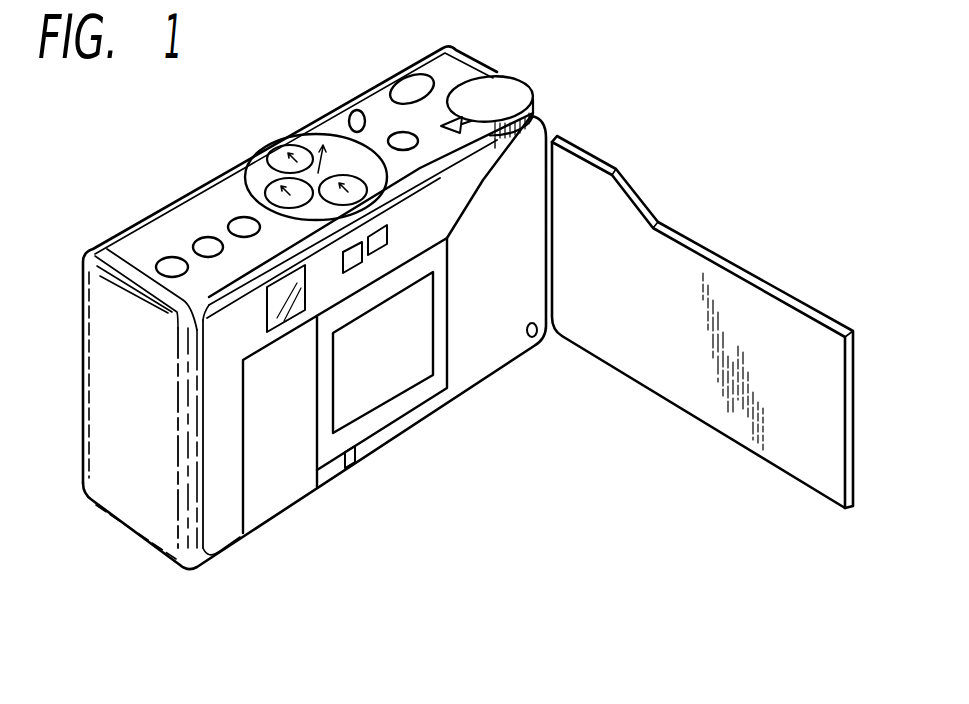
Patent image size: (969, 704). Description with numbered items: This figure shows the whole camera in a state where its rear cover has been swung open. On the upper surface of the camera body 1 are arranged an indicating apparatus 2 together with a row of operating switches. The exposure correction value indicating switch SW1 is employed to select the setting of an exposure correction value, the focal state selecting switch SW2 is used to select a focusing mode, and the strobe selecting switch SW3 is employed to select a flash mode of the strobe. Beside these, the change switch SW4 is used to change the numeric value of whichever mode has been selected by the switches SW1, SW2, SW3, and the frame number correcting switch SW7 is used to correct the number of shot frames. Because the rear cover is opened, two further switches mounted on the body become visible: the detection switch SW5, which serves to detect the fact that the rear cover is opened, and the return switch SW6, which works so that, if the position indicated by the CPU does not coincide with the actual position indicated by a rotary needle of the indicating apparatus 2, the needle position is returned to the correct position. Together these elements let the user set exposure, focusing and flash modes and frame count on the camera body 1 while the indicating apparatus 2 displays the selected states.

The camera body 1 is at (468, 293).
The indicating apparatus 2 is at (316, 151).
The exposure correction value indicating switch SW1 is at (137, 219).
The focal state selecting switch SW2 is at (182, 201).
The strobe selecting switch SW3 is at (224, 175).
The change switch SW4 is at (386, 90).
The detection switch SW5 is at (552, 369).
The return switch SW6 is at (380, 490).
The frame number correcting switch SW7 is at (325, 73).